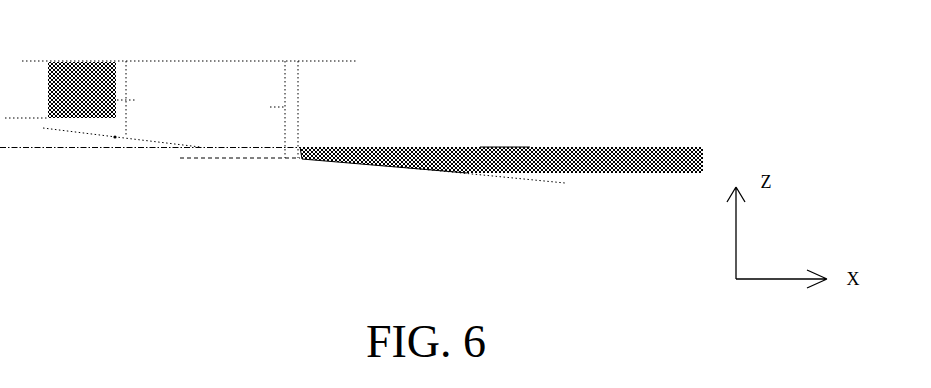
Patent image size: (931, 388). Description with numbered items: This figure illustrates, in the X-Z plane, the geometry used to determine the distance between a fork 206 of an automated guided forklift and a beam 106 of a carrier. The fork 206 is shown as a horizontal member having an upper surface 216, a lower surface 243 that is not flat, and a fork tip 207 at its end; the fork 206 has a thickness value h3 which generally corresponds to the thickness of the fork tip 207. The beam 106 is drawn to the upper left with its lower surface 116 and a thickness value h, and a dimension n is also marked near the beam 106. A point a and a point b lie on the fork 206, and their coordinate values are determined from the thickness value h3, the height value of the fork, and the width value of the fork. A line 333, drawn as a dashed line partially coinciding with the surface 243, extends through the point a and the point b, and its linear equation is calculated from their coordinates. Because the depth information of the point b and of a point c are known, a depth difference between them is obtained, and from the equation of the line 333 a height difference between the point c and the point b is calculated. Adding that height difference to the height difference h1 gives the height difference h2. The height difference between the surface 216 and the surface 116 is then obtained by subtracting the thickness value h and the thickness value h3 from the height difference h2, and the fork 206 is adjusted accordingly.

The beam 106 is at (85, 70).
The surface of the beam 116 is at (72, 118).
The fork 206 is at (575, 160).
The fork tip 207 is at (302, 148).
The surface of the fork 216 is at (503, 148).
The surface of the fork 243 is at (387, 167).
The line 333 is at (533, 183).
The point a is at (466, 177).
The point b is at (302, 153).
The point c is at (113, 138).
The thickness value of the beam h is at (27, 90).
The dimension n is at (15, 132).
The height difference h1 is at (141, 103).
The height difference h2 is at (263, 104).
The thickness value of the fork h3 is at (180, 152).